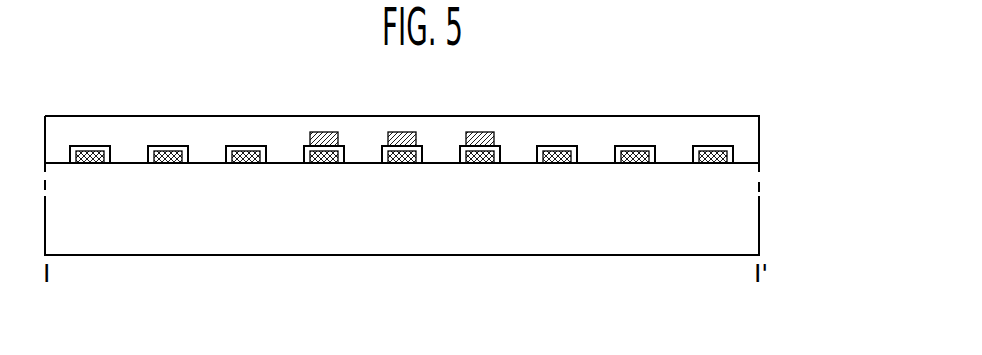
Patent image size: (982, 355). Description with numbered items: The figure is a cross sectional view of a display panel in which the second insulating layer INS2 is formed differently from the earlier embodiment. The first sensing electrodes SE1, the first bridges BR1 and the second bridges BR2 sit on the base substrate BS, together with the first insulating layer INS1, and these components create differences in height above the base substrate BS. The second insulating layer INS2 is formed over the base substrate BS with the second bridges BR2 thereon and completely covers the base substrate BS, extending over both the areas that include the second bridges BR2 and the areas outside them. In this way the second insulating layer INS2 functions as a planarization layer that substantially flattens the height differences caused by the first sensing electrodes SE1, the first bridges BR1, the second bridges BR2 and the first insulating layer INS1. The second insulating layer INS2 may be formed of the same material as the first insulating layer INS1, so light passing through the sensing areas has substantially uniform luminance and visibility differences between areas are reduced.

The second insulating layer INS2 is at (754, 132).
The first insulating layer INS1 is at (730, 157).
The base substrate BS is at (753, 232).
The first sensing electrodes SE1 is at (240, 153).
The first bridges BR1 is at (327, 153).
The second bridges BR2 is at (329, 133).